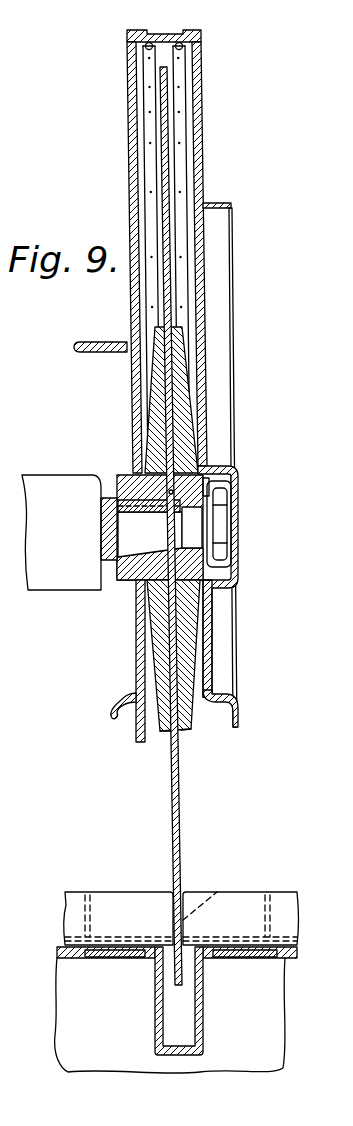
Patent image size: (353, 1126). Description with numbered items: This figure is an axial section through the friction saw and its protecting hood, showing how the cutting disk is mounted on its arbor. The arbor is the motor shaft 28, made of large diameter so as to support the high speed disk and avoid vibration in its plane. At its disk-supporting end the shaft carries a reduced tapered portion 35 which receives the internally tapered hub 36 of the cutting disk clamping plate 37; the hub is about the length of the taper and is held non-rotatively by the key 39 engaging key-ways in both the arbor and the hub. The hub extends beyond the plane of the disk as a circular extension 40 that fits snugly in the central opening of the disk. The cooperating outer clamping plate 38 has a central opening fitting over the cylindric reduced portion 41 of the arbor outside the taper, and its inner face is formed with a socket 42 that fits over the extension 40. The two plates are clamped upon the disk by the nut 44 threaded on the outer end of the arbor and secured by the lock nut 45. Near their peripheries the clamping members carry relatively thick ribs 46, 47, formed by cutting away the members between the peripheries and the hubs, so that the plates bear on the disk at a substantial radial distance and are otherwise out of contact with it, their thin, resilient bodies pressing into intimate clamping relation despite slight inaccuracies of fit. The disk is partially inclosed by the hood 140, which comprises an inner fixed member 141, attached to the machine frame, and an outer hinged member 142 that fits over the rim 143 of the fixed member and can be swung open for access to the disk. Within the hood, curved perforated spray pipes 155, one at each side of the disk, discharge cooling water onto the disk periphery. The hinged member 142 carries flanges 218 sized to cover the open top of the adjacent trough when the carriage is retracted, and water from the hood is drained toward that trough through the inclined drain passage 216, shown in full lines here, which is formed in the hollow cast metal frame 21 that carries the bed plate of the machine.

The hood 140 is at (175, 368).
The inner fixed member 141 is at (128, 191).
The outer hinged member 142 is at (203, 156).
The rim 143 is at (167, 34).
The spray pipes 155 is at (180, 67).
The outer clamping plate 38 is at (185, 446).
The key 39 is at (118, 480).
The circular extension 40 is at (202, 482).
The nut 44 is at (208, 489).
The lock nut 45 is at (219, 498).
The cylindric reduced portion 41 is at (192, 532).
The socket 42 is at (233, 572).
The motor shaft 28 is at (44, 485).
The reduced tapered portion 35 is at (133, 538).
The internally tapered hub 36 is at (132, 576).
The cutting disk clamping plate 37 is at (164, 658).
The rib 46 is at (165, 732).
The rib 47 is at (188, 730).
The hollow cast metal frame 21 is at (186, 818).
The flanges 218 is at (112, 712).
The inclined drain passage 216 is at (180, 1012).